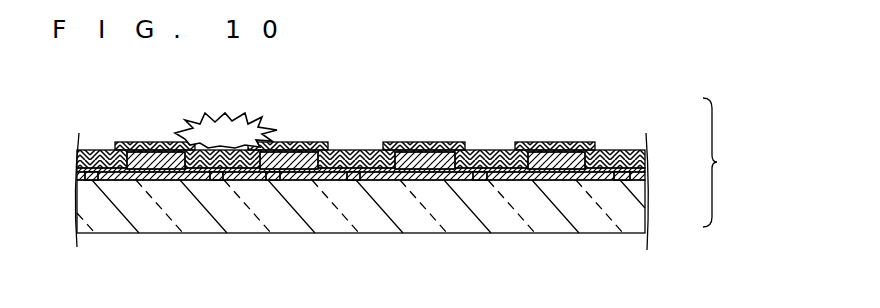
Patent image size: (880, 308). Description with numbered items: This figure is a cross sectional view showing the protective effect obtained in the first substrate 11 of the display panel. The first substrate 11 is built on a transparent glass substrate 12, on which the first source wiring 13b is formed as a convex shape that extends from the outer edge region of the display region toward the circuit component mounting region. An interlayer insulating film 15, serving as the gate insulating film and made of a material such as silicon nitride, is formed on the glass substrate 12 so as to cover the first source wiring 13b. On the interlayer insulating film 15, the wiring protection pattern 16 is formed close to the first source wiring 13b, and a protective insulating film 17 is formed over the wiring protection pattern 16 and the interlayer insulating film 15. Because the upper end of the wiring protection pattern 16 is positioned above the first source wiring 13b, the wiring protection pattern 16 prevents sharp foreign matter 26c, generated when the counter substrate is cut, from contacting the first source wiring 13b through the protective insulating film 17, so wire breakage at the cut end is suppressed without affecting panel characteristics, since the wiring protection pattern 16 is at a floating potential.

The first substrate 11 is at (724, 162).
The glass substrate 12 is at (632, 215).
The first source wiring 13b is at (625, 177).
The interlayer insulating film 15 is at (645, 166).
The wiring protection pattern 16 is at (570, 142).
The protective insulating film 17 is at (647, 153).
The foreign matter 26c is at (243, 126).